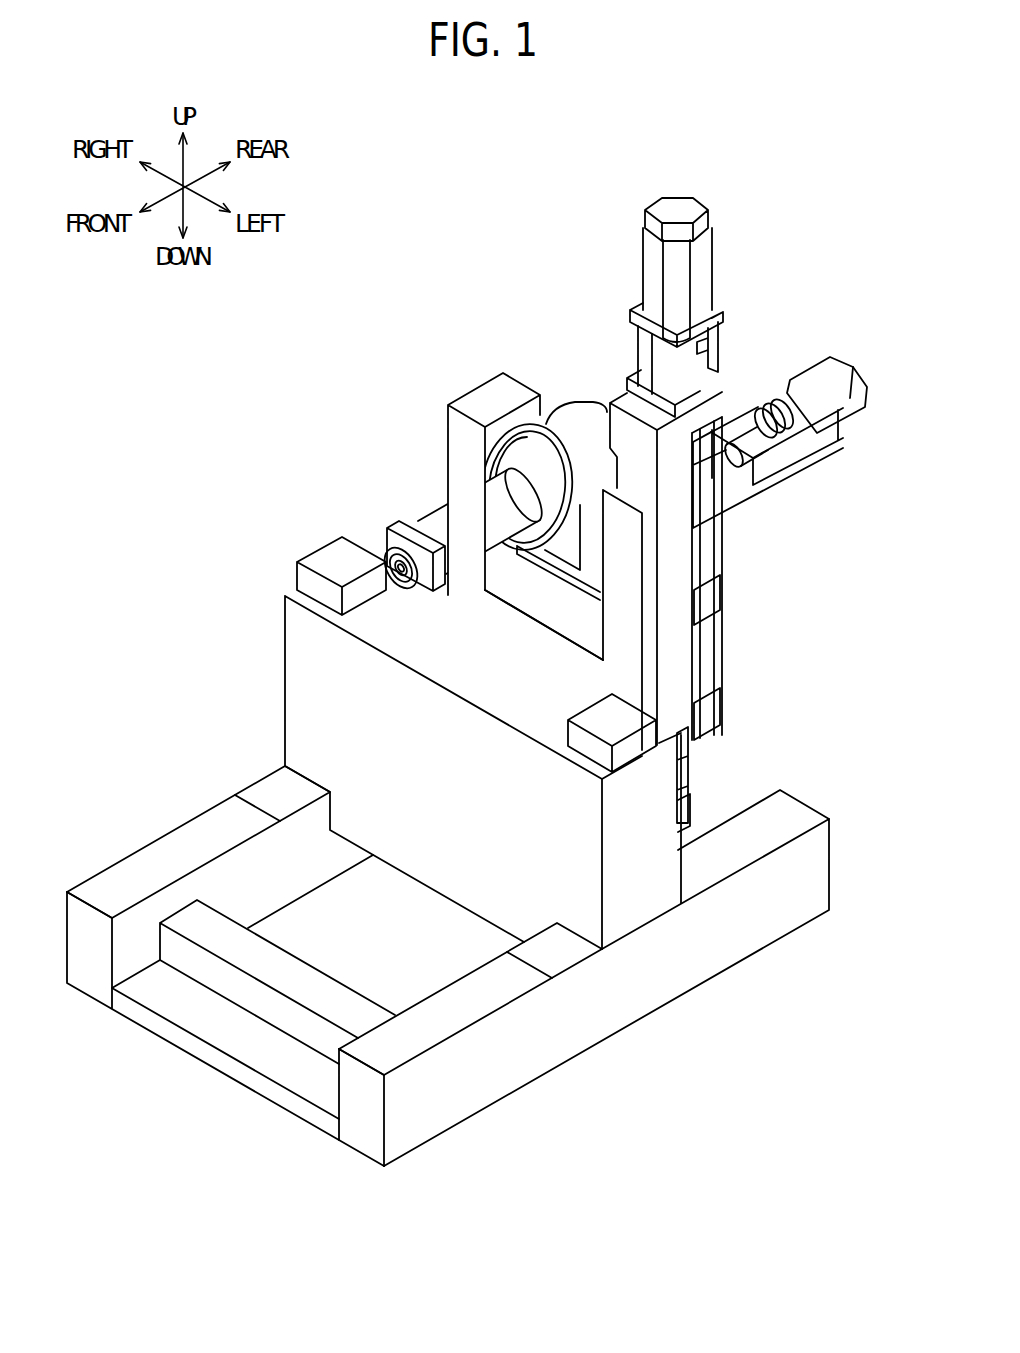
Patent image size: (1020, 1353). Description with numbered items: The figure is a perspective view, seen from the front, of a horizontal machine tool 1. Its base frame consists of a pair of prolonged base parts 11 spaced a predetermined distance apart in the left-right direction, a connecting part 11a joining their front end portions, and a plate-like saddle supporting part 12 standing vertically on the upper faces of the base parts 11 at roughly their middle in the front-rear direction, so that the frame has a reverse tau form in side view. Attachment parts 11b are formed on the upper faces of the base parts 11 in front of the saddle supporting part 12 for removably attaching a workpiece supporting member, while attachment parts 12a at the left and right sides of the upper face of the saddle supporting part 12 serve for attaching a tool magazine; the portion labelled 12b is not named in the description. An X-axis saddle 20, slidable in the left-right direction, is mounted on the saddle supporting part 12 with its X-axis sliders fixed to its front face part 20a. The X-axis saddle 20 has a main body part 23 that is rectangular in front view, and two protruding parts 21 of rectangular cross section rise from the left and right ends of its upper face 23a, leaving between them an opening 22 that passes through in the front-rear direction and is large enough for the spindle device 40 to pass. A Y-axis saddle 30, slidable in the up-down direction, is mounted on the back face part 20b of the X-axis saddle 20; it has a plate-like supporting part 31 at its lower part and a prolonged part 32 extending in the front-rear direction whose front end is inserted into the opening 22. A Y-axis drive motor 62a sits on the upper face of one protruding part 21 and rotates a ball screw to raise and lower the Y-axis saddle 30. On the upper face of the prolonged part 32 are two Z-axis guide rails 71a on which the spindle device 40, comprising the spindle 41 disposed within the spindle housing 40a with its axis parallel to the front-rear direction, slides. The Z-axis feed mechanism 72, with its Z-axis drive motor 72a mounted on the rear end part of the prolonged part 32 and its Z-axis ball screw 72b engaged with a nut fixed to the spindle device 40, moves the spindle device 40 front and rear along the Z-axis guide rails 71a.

The horizontal machine tool 1 is at (769, 184).
The base parts 11 is at (448, 956).
The connecting part 11a is at (220, 978).
The attachment parts 11b is at (192, 837).
The saddle supporting part 12 is at (520, 721).
The attachment parts 12a is at (318, 557).
The rear support portion 12b is at (680, 827).
The X-axis saddle 20 is at (580, 574).
The front face part 20a is at (600, 656).
The back face part 20b is at (693, 760).
The protruding parts 21 is at (483, 397).
The opening 22 is at (660, 652).
The main body part 23 is at (521, 630).
The upper face 23a is at (507, 592).
The Y-axis saddle 30 is at (740, 578).
The supporting part 31 is at (718, 672).
The prolonged part 32 is at (828, 450).
The spindle device 40 is at (496, 449).
The spindle housing 40a is at (440, 523).
The spindle 41 is at (392, 562).
The Y-axis drive motor 62a is at (706, 266).
The Z-axis guide rails 71a is at (790, 453).
The Z-axis feed mechanism 72 is at (757, 410).
The Z-axis drive motor 72a is at (835, 367).
The Z-axis ball screw 72b is at (718, 477).